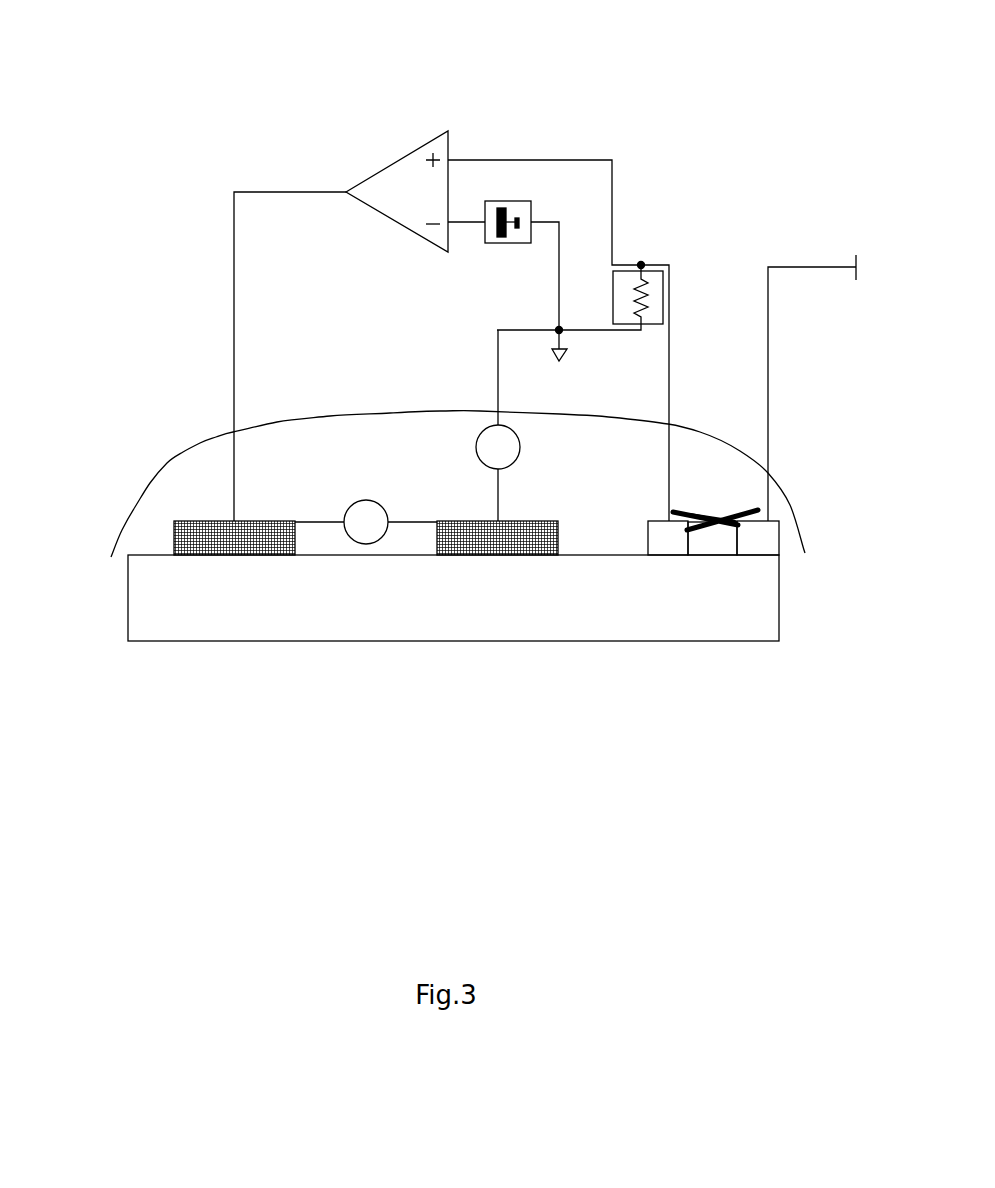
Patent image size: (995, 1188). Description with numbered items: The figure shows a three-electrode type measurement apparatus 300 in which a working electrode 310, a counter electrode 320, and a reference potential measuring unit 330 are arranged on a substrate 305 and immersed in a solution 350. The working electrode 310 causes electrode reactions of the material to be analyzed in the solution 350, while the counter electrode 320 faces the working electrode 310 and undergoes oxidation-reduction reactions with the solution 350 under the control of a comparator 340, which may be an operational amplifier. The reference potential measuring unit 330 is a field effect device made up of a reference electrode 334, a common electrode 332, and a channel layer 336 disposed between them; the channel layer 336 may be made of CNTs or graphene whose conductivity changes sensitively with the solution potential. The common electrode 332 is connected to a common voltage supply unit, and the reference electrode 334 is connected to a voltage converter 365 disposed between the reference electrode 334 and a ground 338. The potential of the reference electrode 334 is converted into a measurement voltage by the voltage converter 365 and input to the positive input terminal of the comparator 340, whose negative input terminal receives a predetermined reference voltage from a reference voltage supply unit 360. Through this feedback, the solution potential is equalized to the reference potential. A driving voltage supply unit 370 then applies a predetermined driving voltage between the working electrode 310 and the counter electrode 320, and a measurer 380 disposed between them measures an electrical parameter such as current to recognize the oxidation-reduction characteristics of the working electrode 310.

The measurement apparatus 300 is at (487, 27).
The substrate 305 is at (150, 603).
The working electrode 310 is at (503, 550).
The counter electrode 320 is at (230, 550).
The reference potential measuring unit 330 is at (704, 575).
The common electrode 332 is at (763, 547).
The reference electrode 334 is at (667, 547).
The channel layer 336 is at (710, 527).
The ground 338 is at (556, 363).
The comparator 340 is at (397, 160).
The solution 350 is at (202, 463).
The reference voltage supply unit 360 is at (507, 243).
The voltage converter 365 is at (652, 327).
The driving voltage supply unit 370 is at (478, 440).
The measurer 380 is at (364, 498).